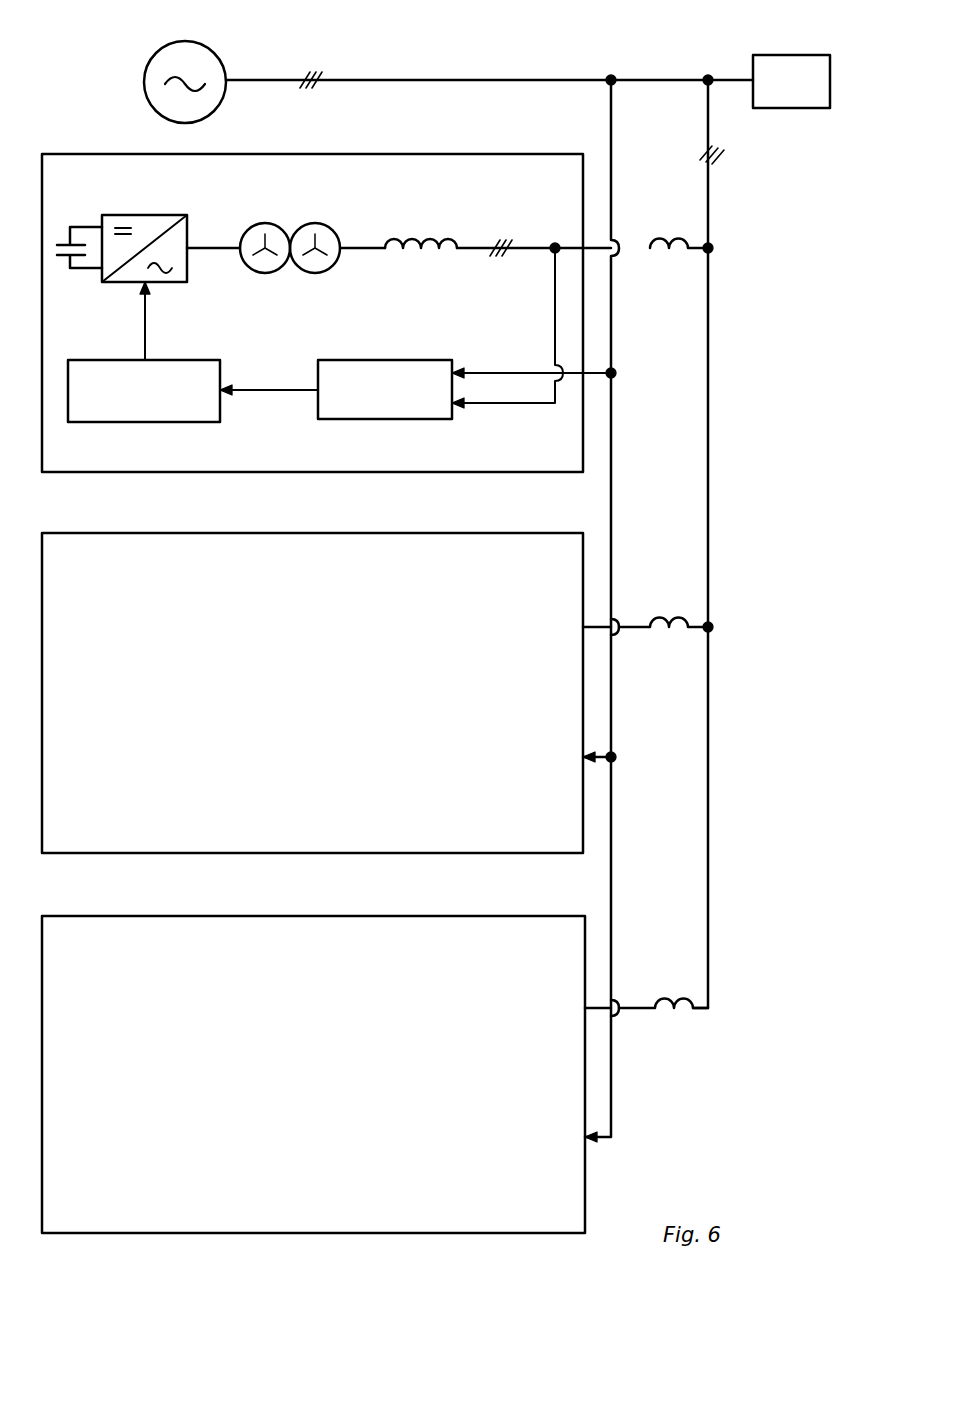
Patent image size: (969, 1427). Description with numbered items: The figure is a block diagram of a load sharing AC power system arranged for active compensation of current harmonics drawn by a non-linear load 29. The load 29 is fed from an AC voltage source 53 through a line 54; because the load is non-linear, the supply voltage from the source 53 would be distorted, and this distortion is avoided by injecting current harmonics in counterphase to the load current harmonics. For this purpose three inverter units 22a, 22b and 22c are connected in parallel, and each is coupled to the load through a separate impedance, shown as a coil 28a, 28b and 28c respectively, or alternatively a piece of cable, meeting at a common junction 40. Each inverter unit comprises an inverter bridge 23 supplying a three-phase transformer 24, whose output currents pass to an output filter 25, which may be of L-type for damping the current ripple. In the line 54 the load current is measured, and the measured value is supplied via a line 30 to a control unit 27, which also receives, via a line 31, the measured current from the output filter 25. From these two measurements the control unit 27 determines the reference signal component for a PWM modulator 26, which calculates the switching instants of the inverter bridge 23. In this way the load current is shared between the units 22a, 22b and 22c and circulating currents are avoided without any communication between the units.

The AC voltage source 53 is at (205, 45).
The line 54 is at (425, 80).
The common junction 40 is at (708, 78).
The non-linear load 29 is at (785, 55).
The line 30 is at (613, 135).
The inverter unit 22a is at (455, 154).
The inverter unit 22b is at (455, 533).
The inverter unit 22c is at (455, 916).
The inverter bridge 23 is at (146, 215).
The three-phase transformer 24 is at (325, 223).
The output filter 25 is at (455, 231).
The PWM modulator 26 is at (145, 422).
The control unit 27 is at (370, 419).
The line 31 is at (508, 403).
The coil 28a is at (665, 230).
The coil 28b is at (665, 610).
The coil 28c is at (665, 990).